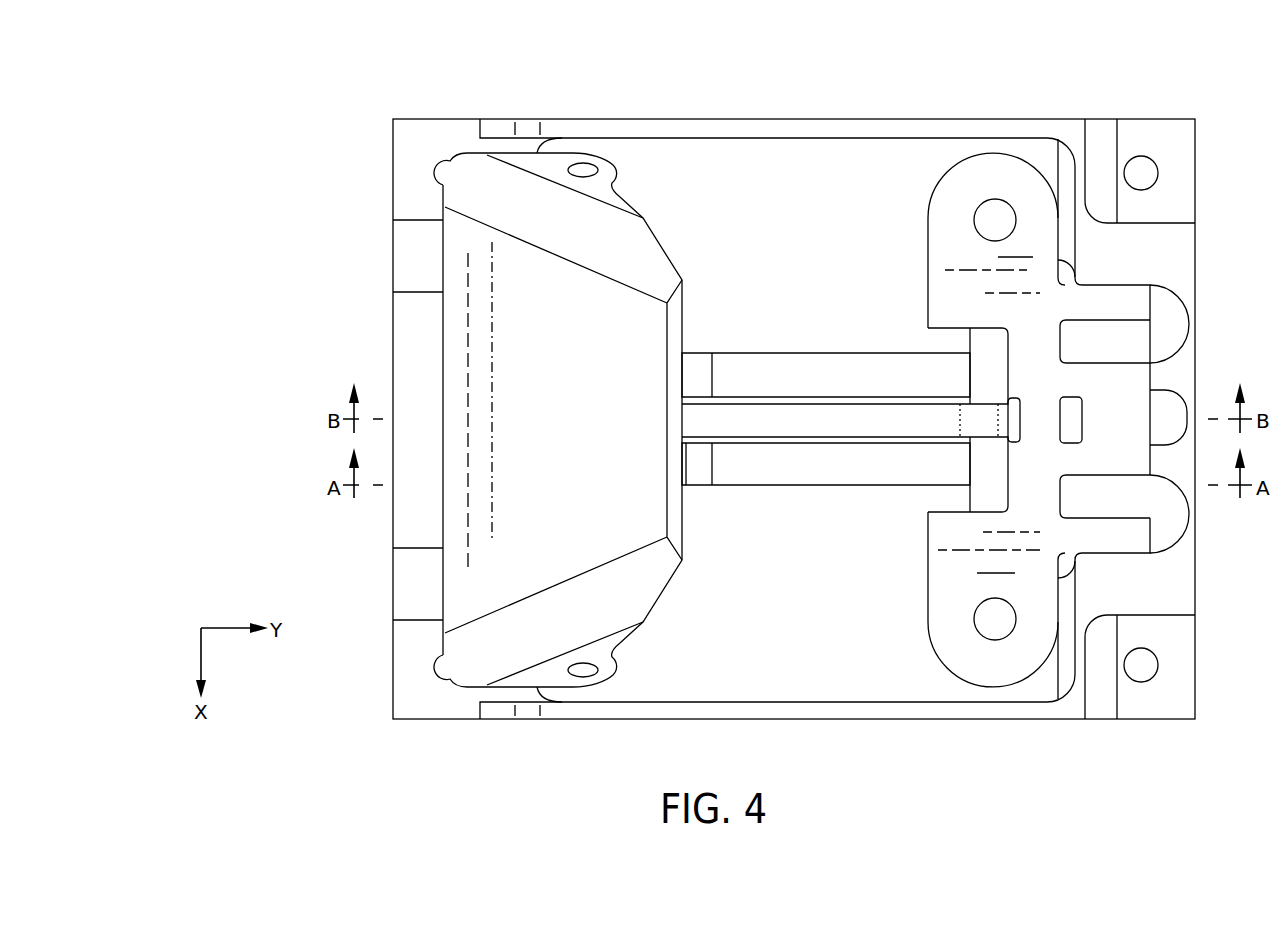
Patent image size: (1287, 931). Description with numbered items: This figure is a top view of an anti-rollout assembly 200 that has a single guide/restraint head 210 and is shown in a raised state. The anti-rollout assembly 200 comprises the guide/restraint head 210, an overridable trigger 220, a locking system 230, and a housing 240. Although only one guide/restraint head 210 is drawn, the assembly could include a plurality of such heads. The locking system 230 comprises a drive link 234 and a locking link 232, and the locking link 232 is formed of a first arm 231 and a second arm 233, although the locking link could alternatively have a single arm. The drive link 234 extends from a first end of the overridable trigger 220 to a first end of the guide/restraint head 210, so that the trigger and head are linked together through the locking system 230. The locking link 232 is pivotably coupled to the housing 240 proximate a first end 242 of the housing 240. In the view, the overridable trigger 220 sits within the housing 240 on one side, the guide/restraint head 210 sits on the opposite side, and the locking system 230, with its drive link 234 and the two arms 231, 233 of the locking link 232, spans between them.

The anti-rollout assembly 200 is at (240, 135).
The guide/restraint head 210 is at (960, 178).
The overridable trigger 220 is at (589, 438).
The locking system 230 is at (840, 454).
The first arm 231 is at (802, 487).
The locking link 232 is at (742, 458).
The second arm 233 is at (848, 382).
The drive link 234 is at (898, 420).
The housing 240 is at (420, 372).
The first end 242 is at (415, 515).